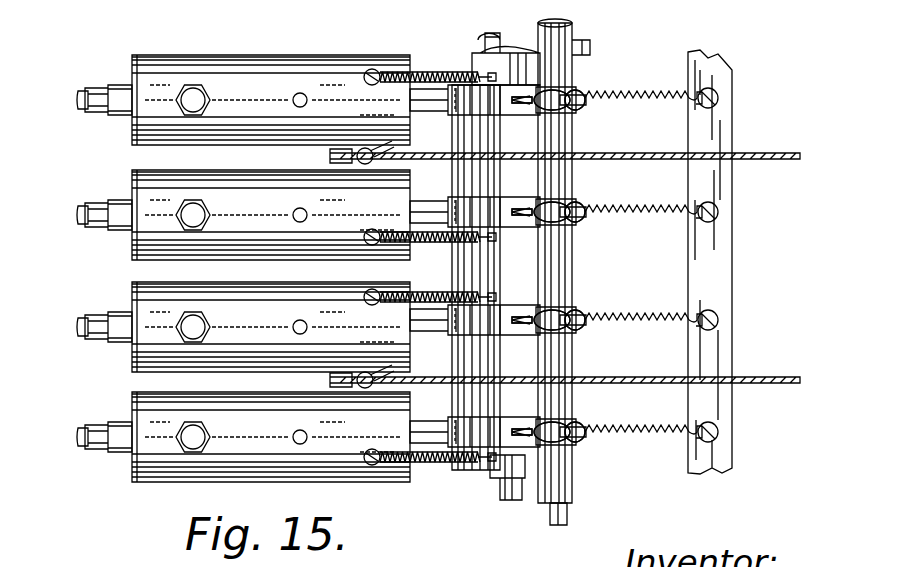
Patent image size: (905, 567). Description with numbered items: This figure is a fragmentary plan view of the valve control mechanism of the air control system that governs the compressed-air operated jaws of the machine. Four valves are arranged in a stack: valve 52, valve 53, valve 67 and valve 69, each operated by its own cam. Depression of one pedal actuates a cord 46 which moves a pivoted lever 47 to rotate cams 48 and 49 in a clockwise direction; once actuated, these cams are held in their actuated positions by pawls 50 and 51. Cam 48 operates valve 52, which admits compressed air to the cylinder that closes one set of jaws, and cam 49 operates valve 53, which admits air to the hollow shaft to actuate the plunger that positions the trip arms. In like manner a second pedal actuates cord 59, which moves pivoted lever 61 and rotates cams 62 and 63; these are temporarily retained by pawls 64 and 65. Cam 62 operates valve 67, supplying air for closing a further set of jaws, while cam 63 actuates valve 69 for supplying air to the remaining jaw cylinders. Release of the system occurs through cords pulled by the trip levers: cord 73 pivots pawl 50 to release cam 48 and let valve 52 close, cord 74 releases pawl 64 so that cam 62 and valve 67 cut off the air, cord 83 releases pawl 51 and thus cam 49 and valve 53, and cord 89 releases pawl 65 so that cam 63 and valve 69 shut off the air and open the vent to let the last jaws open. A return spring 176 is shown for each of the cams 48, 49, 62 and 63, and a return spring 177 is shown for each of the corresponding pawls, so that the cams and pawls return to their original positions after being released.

The valve 67 is at (256, 70).
The valve 69 is at (140, 238).
The valve 52 is at (250, 342).
The valve 53 is at (256, 456).
The pivoted lever 61 is at (440, 141).
The cord 89 is at (515, 212).
The cord 73 is at (520, 320).
The pivoted lever 47 is at (437, 378).
The cam 62 is at (576, 92).
The pawl 64 is at (565, 108).
The cam 63 is at (580, 205).
The pawl 65 is at (575, 222).
The cam 48 is at (585, 310).
The pawl 50 is at (578, 332).
The cam 49 is at (586, 422).
The pawl 51 is at (578, 440).
The return spring 176 is at (432, 70).
The return spring 177 is at (652, 92).
The cord 74 is at (496, 90).
The cord 83 is at (524, 438).
The cord 59 is at (780, 150).
The cord 46 is at (780, 384).